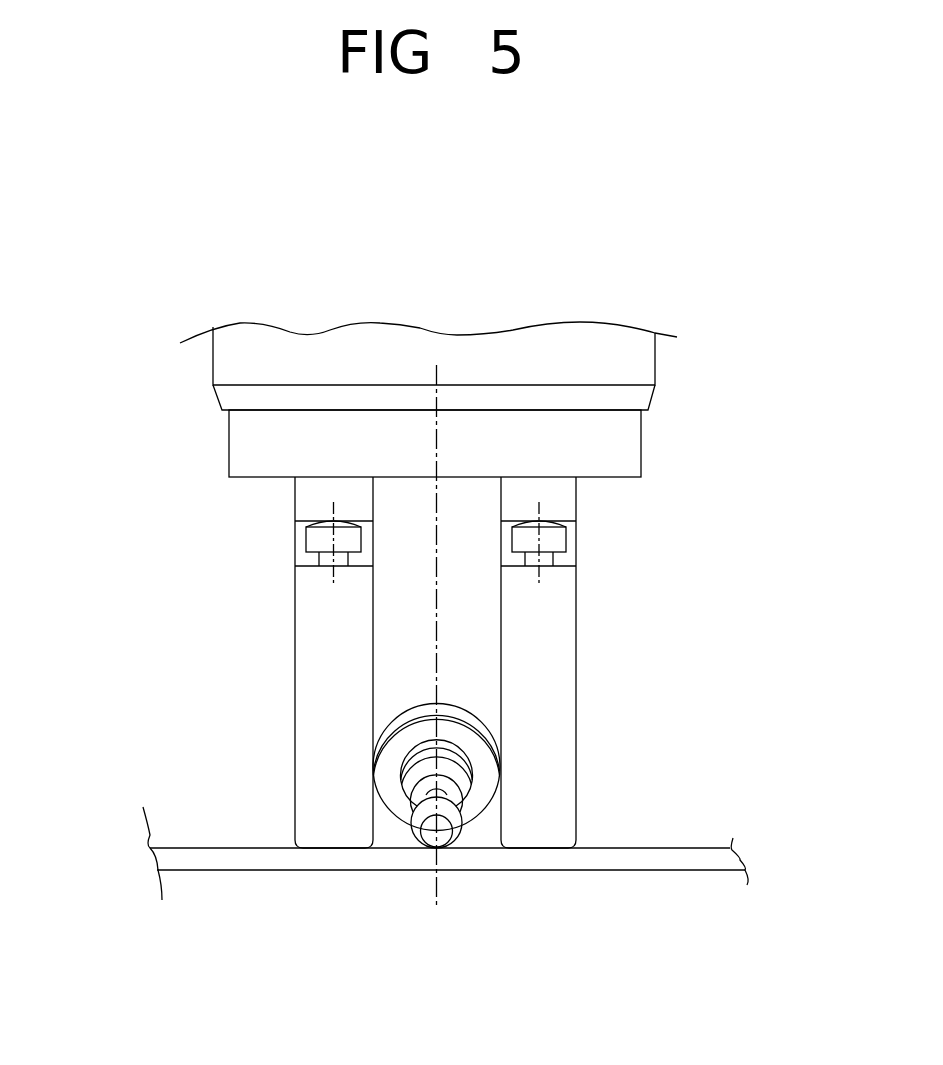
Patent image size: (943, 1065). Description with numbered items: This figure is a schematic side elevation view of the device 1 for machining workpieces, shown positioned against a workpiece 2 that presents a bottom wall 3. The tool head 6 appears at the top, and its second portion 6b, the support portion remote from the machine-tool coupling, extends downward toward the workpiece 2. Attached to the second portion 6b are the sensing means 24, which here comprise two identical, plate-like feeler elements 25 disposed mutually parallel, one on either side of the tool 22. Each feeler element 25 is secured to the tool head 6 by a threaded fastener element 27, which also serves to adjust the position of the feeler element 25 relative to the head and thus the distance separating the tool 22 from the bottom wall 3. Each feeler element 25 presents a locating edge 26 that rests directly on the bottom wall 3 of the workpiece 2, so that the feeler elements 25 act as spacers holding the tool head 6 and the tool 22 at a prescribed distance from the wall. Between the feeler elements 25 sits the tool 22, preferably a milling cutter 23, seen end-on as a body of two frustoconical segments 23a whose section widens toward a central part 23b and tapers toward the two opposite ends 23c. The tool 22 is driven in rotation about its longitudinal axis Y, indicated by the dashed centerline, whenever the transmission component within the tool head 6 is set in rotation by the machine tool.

The device for machining workpieces 1 is at (125, 327).
The workpiece 2 is at (668, 872).
The bottom wall 3 is at (706, 855).
The tool head 6 is at (657, 360).
The second portion of tool head 6b is at (248, 447).
The tool 22 is at (387, 823).
The milling cutter 23 is at (415, 837).
The frustoconical segments 23a is at (458, 823).
The central part 23b is at (455, 800).
The opposite ends 23c is at (448, 838).
The sensing means 24 is at (578, 606).
The feeler element 25 is at (550, 672).
The locating edge 26 is at (330, 848).
The threaded fastener elements 27 is at (325, 538).
The longitudinal axis of tool Y is at (436, 893).